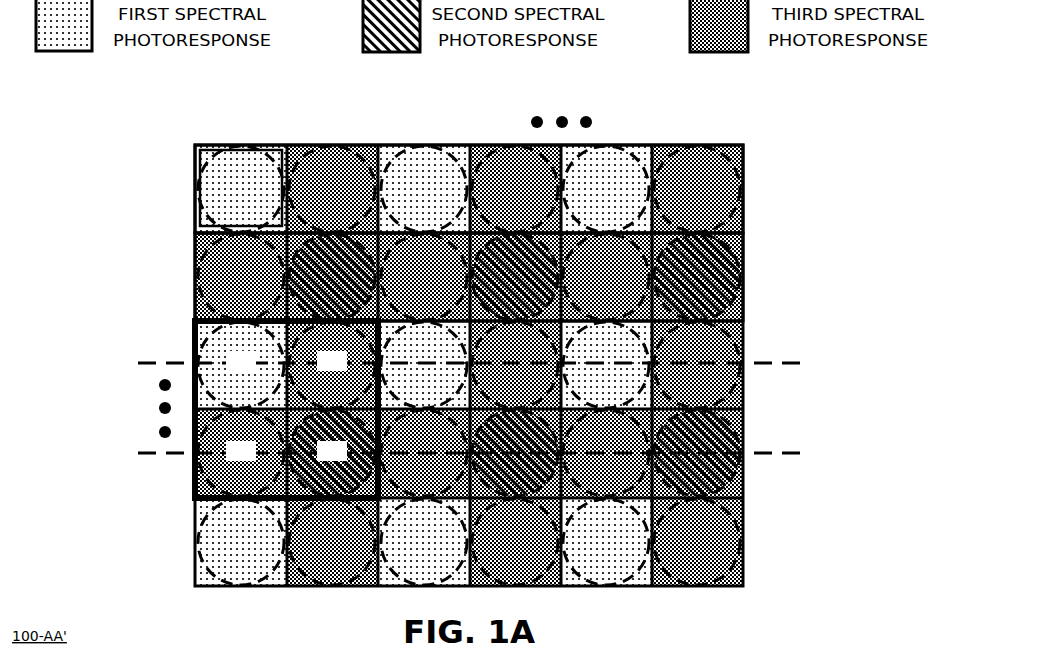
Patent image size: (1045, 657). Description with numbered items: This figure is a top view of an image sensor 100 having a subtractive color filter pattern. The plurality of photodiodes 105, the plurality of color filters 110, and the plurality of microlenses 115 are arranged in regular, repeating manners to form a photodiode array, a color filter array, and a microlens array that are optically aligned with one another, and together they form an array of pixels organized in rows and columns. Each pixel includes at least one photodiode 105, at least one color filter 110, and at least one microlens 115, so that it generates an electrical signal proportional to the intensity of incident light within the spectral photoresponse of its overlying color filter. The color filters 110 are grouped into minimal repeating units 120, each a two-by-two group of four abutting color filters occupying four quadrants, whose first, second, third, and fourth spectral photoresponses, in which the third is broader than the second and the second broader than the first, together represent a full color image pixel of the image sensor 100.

The image sensor 100 is at (177, 108).
The plurality of photodiodes 105 is at (194, 144).
The plurality of color filters 110 is at (746, 146).
The plurality of microlenses 115 is at (746, 234).
The minimal repeating unit 120 is at (194, 320).